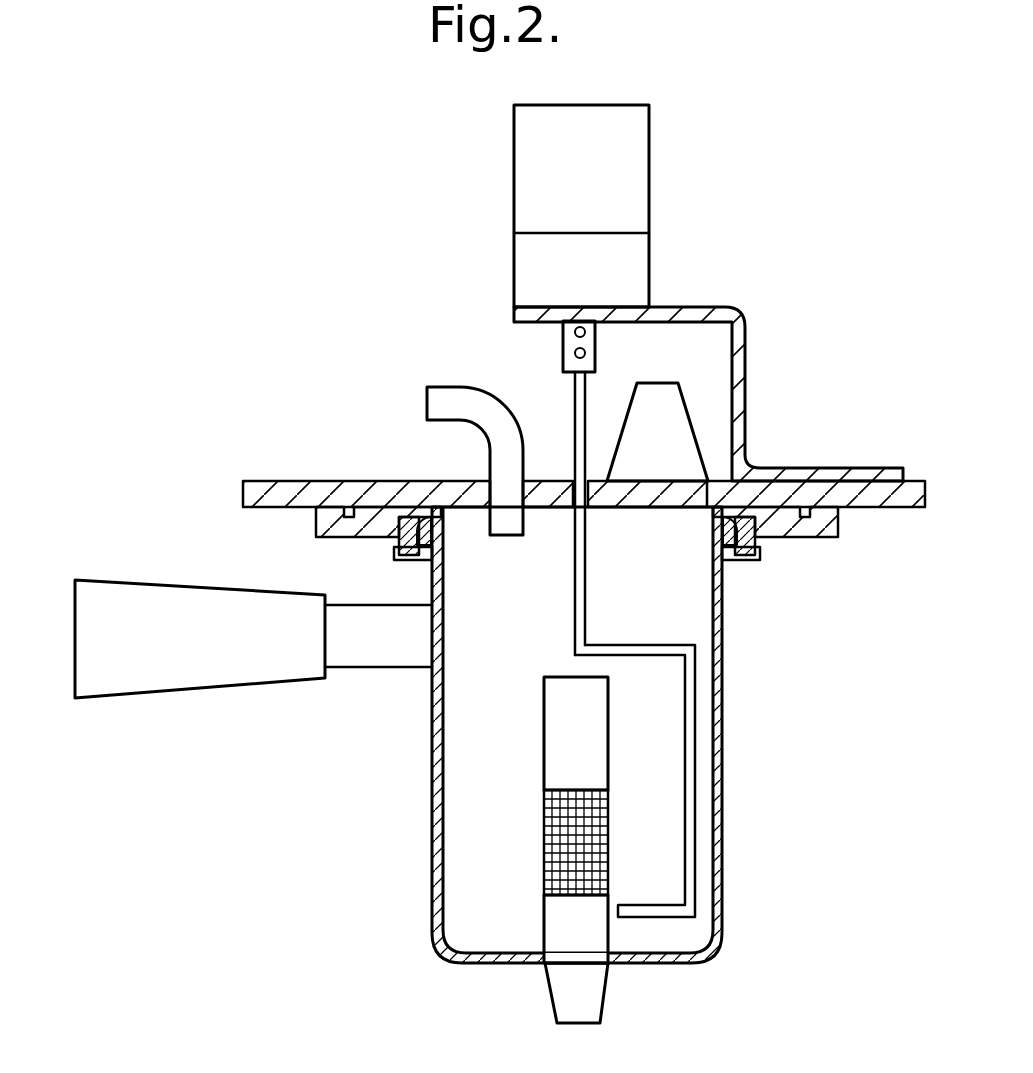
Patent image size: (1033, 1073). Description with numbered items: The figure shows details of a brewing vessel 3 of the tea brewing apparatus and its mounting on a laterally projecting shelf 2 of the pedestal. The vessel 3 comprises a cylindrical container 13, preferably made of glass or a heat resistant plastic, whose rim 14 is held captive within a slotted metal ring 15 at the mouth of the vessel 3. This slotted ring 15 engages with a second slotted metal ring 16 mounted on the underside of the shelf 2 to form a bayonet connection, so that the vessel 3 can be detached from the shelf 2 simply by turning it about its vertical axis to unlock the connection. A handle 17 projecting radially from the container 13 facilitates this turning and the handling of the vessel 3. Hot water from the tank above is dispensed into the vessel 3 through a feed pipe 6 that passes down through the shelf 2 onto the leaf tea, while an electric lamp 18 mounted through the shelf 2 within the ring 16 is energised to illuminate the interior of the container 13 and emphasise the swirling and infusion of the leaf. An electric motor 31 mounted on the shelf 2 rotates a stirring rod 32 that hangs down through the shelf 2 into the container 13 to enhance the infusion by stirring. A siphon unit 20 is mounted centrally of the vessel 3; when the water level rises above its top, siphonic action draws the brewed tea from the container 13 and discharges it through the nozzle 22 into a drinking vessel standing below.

The shelf 2 is at (318, 481).
The brewing vessel 3 is at (575, 765).
The feed pipe 6 is at (455, 388).
The container 13 is at (730, 797).
The rim 14 is at (725, 530).
The slotted metal ring 15 is at (388, 507).
The slotted metal ring 16 is at (316, 527).
The handle 17 is at (75, 672).
The electric lamp 18 is at (655, 392).
The siphon unit 20 is at (533, 773).
The nozzle 22 is at (580, 990).
The electric motor 31 is at (652, 166).
The stirring rod 32 is at (692, 846).